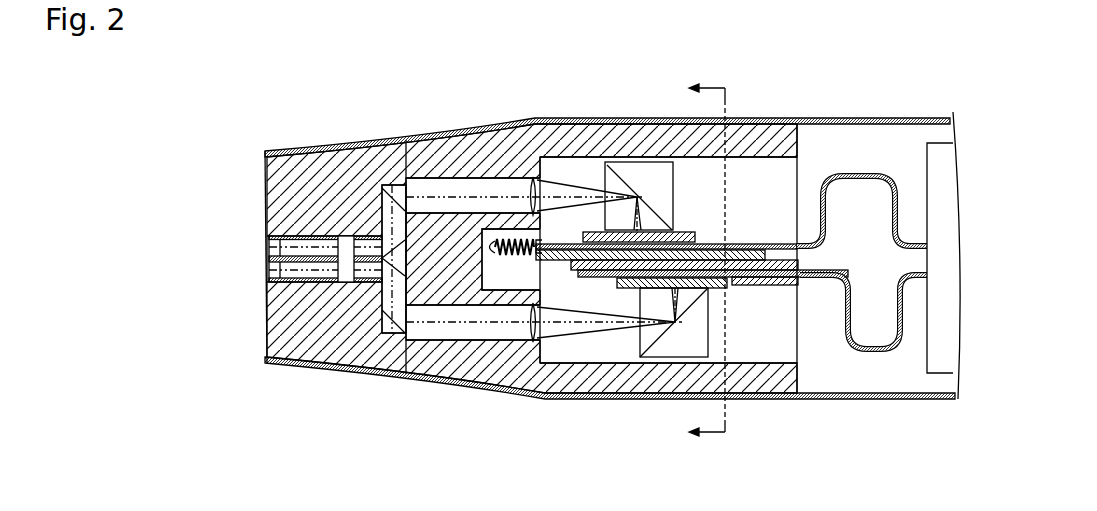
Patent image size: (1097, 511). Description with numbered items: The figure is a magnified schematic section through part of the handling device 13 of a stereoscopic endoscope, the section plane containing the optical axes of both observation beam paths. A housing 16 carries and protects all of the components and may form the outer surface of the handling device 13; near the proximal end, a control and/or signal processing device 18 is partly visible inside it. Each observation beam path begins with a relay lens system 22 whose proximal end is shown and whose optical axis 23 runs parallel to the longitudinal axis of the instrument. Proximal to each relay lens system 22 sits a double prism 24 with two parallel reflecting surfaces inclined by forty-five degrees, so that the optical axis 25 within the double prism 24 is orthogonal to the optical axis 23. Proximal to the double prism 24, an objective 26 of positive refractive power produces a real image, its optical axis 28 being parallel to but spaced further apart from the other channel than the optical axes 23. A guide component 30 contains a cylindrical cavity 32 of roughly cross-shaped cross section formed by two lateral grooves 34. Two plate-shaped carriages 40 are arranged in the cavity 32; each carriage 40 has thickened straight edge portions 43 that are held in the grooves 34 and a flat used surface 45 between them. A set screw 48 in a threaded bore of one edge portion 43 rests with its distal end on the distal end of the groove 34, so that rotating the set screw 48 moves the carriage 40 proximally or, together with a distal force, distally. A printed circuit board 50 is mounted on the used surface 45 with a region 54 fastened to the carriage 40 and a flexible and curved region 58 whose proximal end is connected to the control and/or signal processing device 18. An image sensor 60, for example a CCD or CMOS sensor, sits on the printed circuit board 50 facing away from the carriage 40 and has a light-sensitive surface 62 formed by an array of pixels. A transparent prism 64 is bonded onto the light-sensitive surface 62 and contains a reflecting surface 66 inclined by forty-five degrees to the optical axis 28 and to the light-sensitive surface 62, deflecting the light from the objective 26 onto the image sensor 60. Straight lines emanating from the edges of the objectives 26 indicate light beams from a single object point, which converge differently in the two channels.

The handling device 13 is at (328, 46).
The housing 16 is at (627, 399).
The control and/or signal processing device 18 is at (935, 374).
The relay lens system 22 is at (293, 280).
The optical axis of the relay lens system 23 is at (332, 280).
The double prism 24 is at (378, 303).
The optical axis within the double prism 25 is at (398, 305).
The objective 26 is at (531, 336).
The optical axis of the objective 28 is at (567, 326).
The guide component 30 is at (757, 127).
The cylindrical cavity 32 is at (793, 162).
The groove 34 is at (785, 235).
The carriage 40 is at (553, 250).
The straight edge portion 43 is at (757, 233).
The used surface 45 is at (540, 247).
The set screw 48 is at (493, 254).
The printed circuit board 50 is at (762, 278).
The region fastened to the used surface 54 is at (762, 278).
The flexible and curved region 58 is at (880, 353).
The image sensor 60 is at (570, 244).
The light-sensitive surface 62 is at (660, 230).
The prism 64 is at (622, 164).
The reflecting surface 66 is at (588, 231).